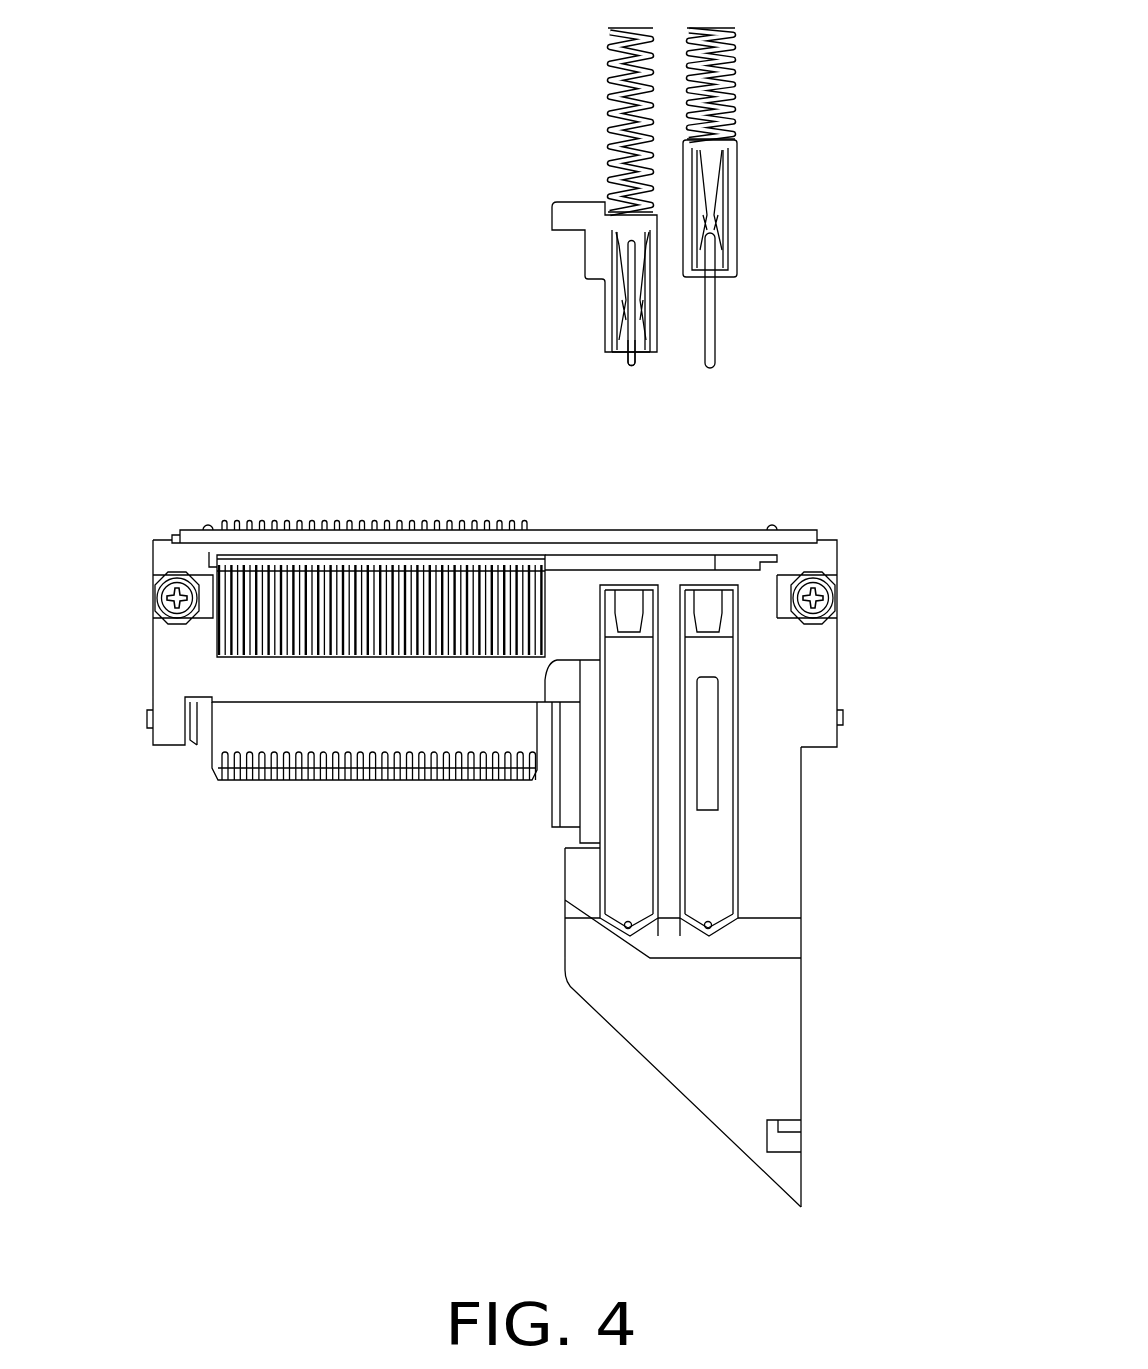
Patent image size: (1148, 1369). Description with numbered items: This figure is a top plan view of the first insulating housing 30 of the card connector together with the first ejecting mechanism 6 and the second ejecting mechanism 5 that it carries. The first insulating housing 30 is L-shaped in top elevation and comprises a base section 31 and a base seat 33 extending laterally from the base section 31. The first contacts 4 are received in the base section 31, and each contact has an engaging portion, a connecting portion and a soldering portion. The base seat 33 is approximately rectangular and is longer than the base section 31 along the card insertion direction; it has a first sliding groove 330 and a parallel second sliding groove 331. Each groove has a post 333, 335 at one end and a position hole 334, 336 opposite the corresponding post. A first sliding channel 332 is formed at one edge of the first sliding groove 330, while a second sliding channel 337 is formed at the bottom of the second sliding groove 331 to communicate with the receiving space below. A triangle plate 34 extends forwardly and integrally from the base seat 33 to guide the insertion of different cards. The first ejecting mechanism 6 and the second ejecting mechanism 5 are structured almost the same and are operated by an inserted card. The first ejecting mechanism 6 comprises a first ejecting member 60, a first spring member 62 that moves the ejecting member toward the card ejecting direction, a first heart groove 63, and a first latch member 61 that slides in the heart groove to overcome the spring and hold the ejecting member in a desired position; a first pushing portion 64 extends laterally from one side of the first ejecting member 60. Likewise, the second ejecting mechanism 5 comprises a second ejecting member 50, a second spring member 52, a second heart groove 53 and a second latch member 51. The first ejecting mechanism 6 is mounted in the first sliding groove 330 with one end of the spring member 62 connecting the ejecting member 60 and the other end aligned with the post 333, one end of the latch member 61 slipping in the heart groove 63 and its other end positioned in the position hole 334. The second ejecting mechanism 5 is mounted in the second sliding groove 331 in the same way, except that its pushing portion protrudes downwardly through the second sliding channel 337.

The first insulating housing 30 is at (842, 510).
The base section 31 is at (298, 676).
The base seat 33 is at (765, 687).
The triangle plate 34 is at (757, 1048).
The first contacts 4 is at (312, 570).
The first sliding groove 330 is at (625, 783).
The second sliding groove 331 is at (703, 852).
The first sliding channel 332 is at (560, 683).
The post 333 is at (632, 600).
The position hole 334 is at (565, 912).
The post 335 is at (708, 602).
The position hole 336 is at (733, 920).
The second sliding channel 337 is at (710, 757).
The second ejecting mechanism 5 is at (718, 112).
The second ejecting member 50 is at (735, 167).
The second latch member 51 is at (710, 317).
The second spring member 52 is at (707, 35).
The second heart groove 53 is at (717, 203).
The first ejecting mechanism 6 is at (612, 183).
The first ejecting member 60 is at (655, 265).
The first latch member 61 is at (640, 338).
The first spring member 62 is at (630, 50).
The first heart groove 63 is at (622, 278).
The first pushing portion 64 is at (565, 217).